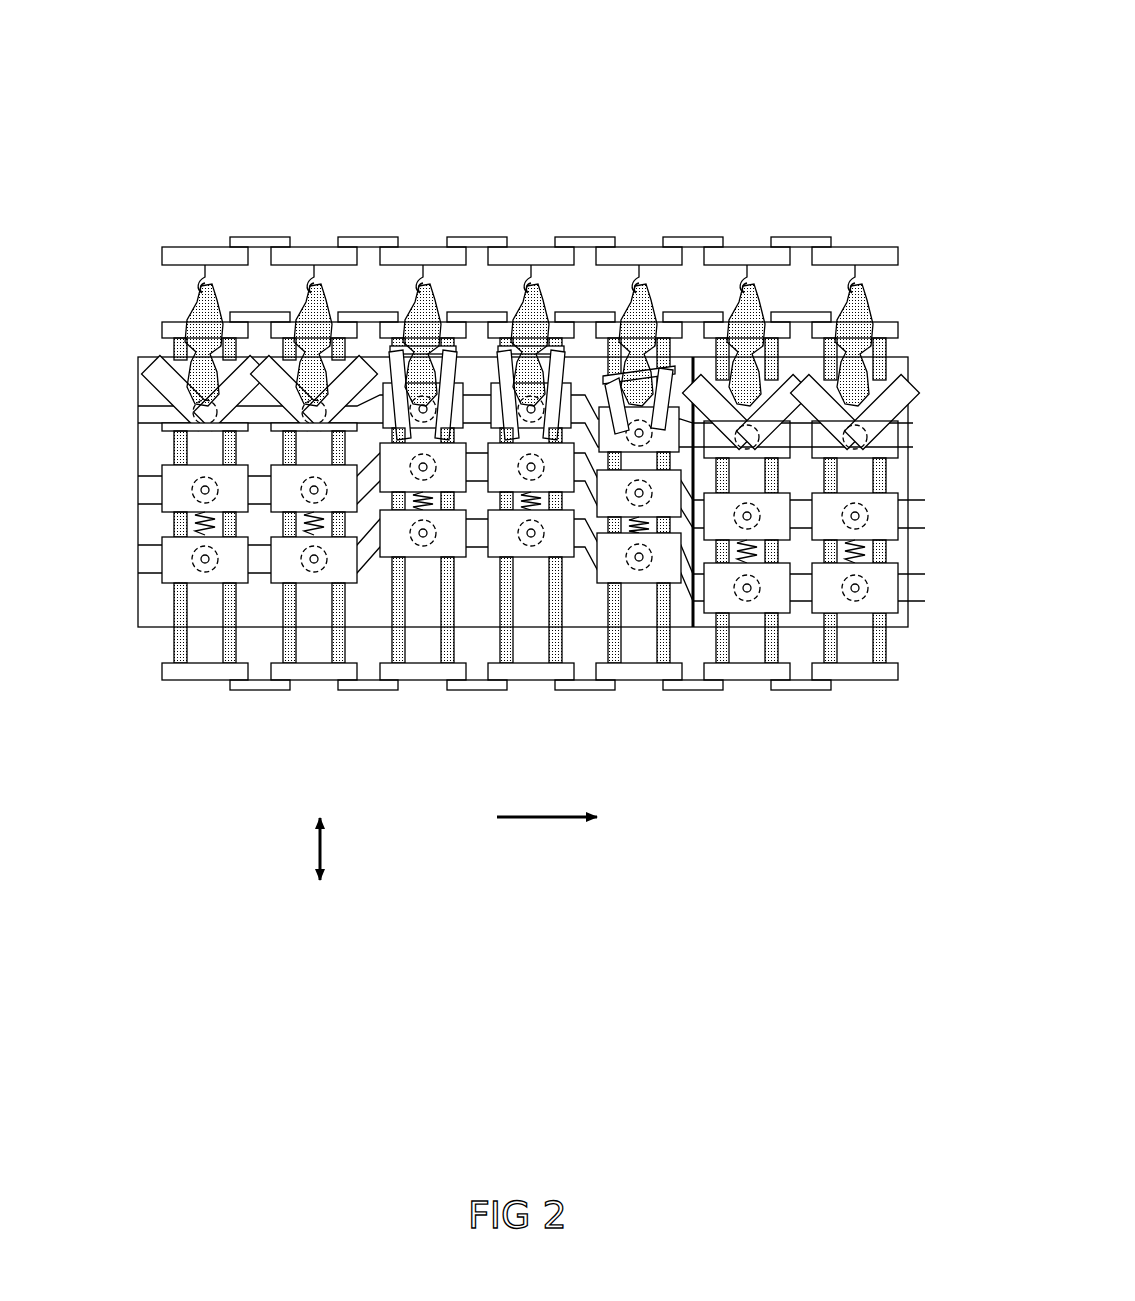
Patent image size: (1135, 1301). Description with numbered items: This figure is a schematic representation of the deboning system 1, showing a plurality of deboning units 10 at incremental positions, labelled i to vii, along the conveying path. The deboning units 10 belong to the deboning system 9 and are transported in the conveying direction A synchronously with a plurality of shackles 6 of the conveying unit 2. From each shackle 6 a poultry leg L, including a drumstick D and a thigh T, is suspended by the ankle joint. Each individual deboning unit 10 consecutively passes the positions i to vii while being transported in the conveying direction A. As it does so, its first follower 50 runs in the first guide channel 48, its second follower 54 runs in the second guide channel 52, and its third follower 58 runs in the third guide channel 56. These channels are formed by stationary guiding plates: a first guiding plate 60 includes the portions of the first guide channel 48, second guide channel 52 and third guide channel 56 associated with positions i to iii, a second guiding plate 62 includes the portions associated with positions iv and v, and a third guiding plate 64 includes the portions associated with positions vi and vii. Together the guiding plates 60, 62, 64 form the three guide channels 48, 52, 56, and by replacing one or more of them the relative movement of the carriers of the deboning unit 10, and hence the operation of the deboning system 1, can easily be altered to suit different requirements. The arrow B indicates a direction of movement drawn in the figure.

The deboning system 1 is at (776, 76).
The conveying unit 2 is at (283, 220).
The shackle 6 is at (425, 245).
The deboning system 9 is at (676, 285).
The poultry leg L is at (323, 295).
The drumstick D is at (866, 303).
The thigh T is at (872, 387).
The first guide channel 48 is at (152, 408).
The first follower 50 is at (868, 440).
The second guide channel 52 is at (152, 490).
The second follower 54 is at (868, 513).
The third guide channel 56 is at (152, 560).
The third follower 58 is at (868, 590).
The first guiding plate 60 is at (168, 628).
The second guiding plate 62 is at (633, 627).
The third guiding plate 64 is at (857, 625).
The deboning unit 10 is at (420, 665).
The conveying direction A is at (555, 820).
The vertical movement direction B is at (316, 843).